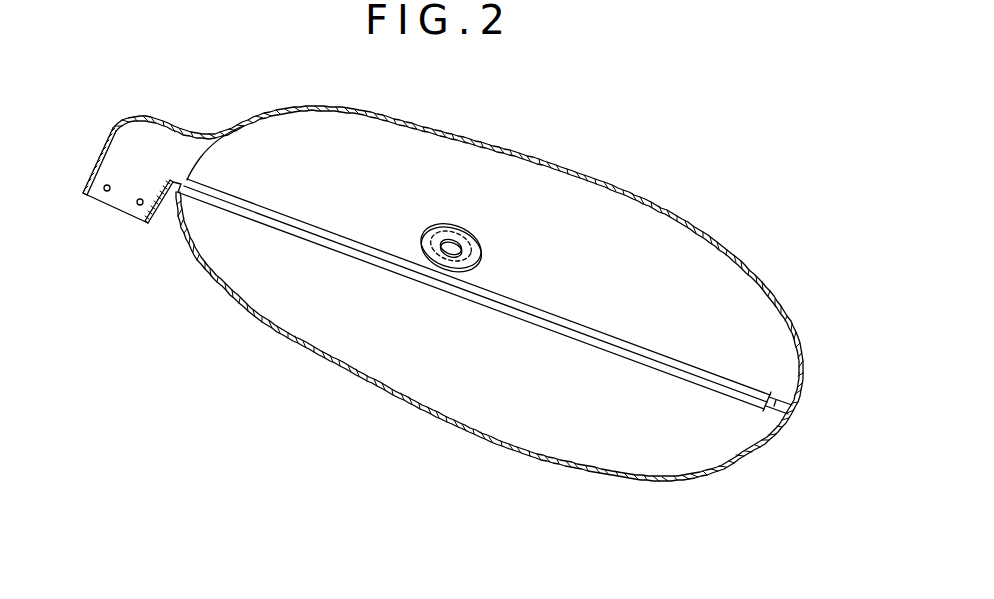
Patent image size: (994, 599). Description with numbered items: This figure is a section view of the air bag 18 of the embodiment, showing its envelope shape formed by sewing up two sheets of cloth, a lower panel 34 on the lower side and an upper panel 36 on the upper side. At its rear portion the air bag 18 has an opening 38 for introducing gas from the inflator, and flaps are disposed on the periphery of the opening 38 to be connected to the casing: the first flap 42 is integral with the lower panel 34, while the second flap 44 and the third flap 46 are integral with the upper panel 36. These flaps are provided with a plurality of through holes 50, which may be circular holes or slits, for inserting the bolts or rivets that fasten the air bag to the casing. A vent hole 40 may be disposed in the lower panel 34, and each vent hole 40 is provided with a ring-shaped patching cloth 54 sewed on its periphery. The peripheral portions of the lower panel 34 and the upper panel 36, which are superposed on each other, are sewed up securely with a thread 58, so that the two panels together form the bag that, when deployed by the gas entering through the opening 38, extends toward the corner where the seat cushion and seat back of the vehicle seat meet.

The air bag 18 is at (672, 198).
The lower panel 34 is at (621, 483).
The upper panel 36 is at (552, 161).
The opening 38 is at (132, 173).
The vent hole 40 is at (453, 243).
The first flap 42 is at (163, 213).
The second flap 44 is at (113, 205).
The third flap 46 is at (100, 152).
The through holes 50 is at (93, 175).
The ring-shaped patching cloth 54 is at (483, 262).
The thread 58 is at (777, 393).